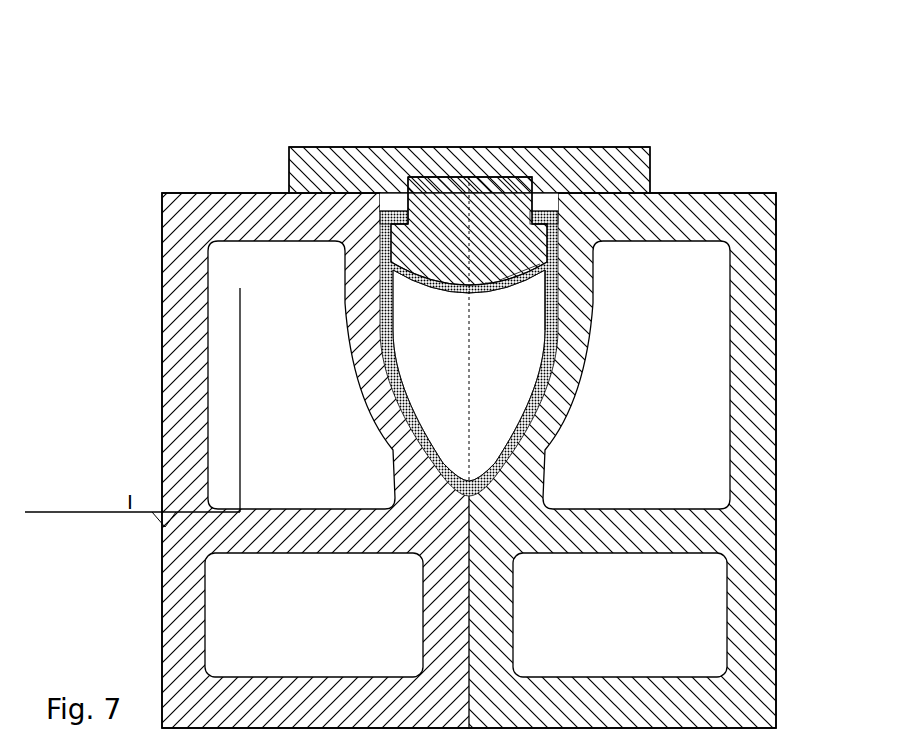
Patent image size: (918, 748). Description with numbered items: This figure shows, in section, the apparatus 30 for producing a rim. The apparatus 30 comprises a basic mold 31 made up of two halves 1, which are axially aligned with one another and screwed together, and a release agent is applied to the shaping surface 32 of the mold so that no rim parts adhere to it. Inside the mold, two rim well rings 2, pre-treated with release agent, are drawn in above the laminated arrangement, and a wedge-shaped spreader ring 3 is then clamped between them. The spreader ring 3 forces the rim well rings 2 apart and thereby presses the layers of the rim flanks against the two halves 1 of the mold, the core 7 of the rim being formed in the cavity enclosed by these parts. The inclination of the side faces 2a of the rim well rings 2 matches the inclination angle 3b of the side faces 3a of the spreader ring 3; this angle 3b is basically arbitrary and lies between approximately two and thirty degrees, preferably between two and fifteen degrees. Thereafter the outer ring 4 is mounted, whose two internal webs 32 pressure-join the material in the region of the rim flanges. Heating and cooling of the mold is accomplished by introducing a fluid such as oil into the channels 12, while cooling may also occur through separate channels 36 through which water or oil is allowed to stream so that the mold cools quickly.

The mold half 1 is at (752, 572).
The rim well ring 2 is at (455, 286).
The side face of rim well ring 2a is at (542, 212).
The spreader ring 3 is at (470, 282).
The side face of spreader ring 3a is at (509, 270).
The inclination angle 3b is at (485, 283).
The outer ring 4 is at (318, 138).
The core 7 is at (445, 357).
The channels 12 is at (292, 412).
The apparatus 30 is at (133, 87).
The basic mold 31 is at (130, 223).
The internal webs 32 is at (392, 205).
The separate channels 36 is at (227, 612).